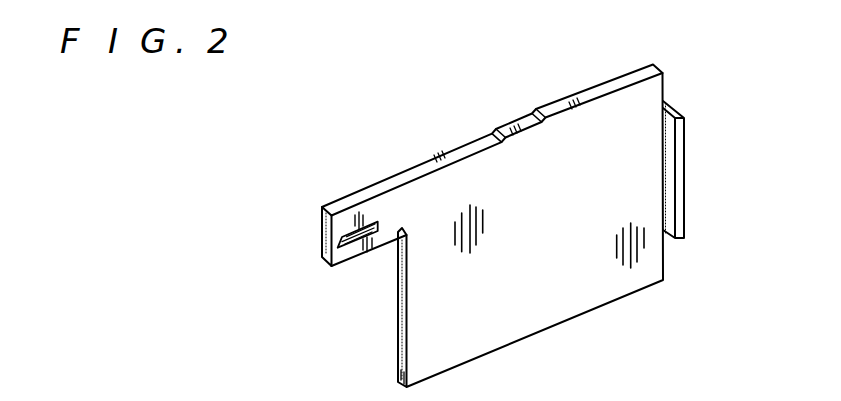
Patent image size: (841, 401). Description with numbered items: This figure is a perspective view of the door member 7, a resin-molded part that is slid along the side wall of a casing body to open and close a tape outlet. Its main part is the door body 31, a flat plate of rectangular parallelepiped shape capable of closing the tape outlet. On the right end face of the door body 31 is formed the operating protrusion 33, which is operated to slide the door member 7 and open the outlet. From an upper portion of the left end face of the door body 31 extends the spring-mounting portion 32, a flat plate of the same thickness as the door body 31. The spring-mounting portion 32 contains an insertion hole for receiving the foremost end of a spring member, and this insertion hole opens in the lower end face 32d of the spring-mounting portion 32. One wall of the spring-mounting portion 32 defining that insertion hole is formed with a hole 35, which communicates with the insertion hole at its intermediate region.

The door member 7 is at (455, 121).
The door body 31 is at (573, 305).
The spring-mounting portion 32 is at (340, 205).
The lower end face 32d is at (348, 264).
The operating protrusion 33 is at (679, 207).
The hole 35 is at (356, 241).